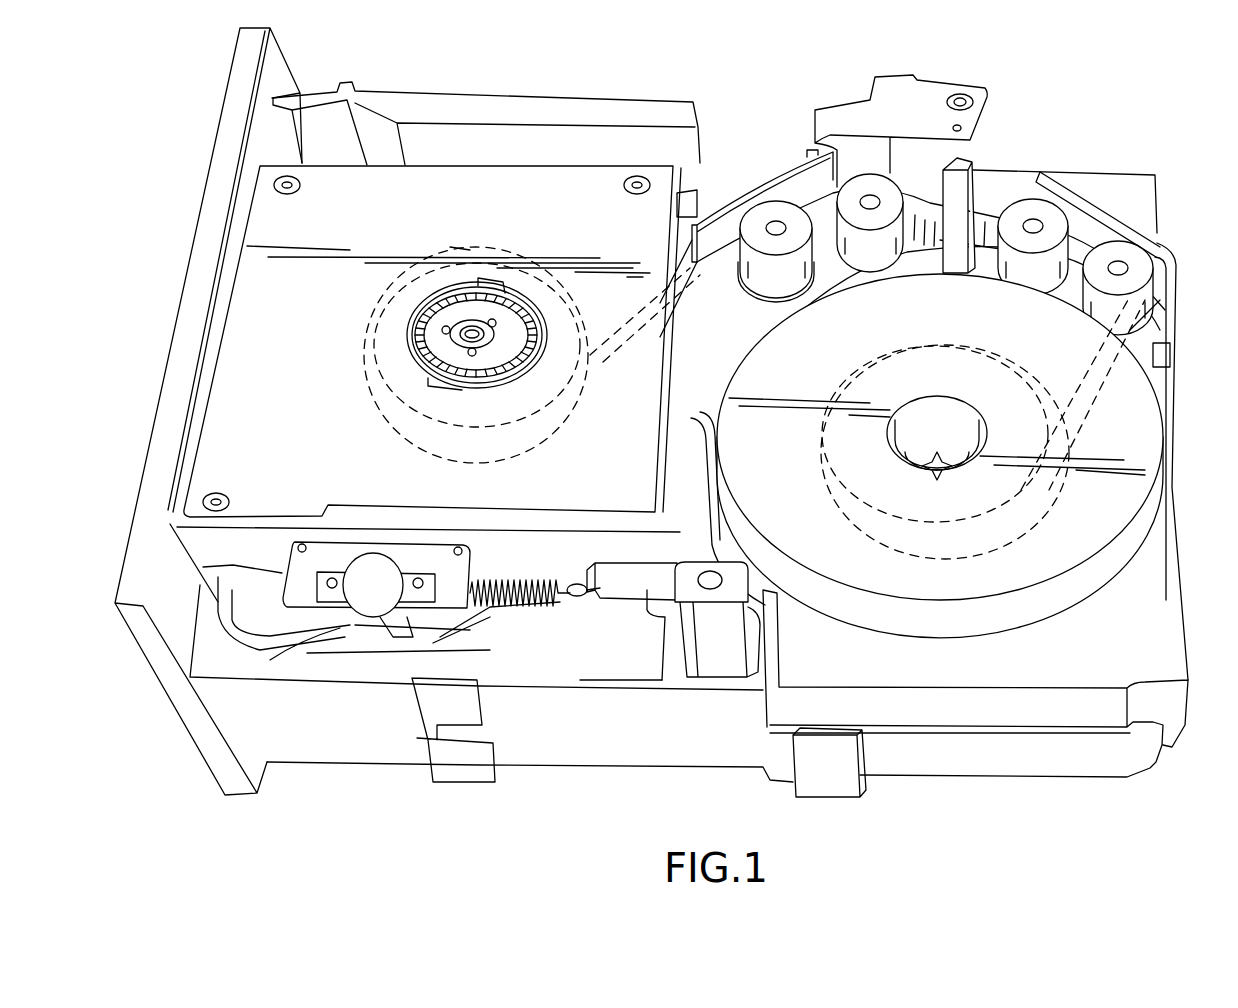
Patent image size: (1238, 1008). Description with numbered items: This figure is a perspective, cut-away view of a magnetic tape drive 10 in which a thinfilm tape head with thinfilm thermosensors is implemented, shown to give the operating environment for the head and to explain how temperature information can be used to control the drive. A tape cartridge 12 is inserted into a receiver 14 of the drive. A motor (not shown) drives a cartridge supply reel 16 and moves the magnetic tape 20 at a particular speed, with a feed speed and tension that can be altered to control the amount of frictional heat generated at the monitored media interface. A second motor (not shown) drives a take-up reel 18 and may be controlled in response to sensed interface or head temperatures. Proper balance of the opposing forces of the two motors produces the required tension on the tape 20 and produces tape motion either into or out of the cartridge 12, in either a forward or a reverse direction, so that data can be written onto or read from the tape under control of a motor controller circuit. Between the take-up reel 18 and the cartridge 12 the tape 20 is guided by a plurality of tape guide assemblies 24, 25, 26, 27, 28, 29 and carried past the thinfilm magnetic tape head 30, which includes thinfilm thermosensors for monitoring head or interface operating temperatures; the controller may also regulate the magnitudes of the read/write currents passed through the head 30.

The magnetic tape drive 10 is at (1105, 127).
The tape cartridge 12 is at (247, 307).
The receiver 14 is at (217, 337).
The cartridge supply reel 16 is at (503, 293).
The take-up reel 18 is at (1007, 398).
The magnetic tape 20 is at (923, 190).
The tape guide assembly 24 is at (770, 207).
The tape guide assembly 25 is at (868, 182).
The tape guide assembly 26 is at (1053, 210).
The tape guide assembly 27 is at (1133, 253).
The tape guide assembly 28 is at (1103, 207).
The tape guide assembly 29 is at (727, 213).
The thinfilm magnetic tape head 30 is at (962, 163).